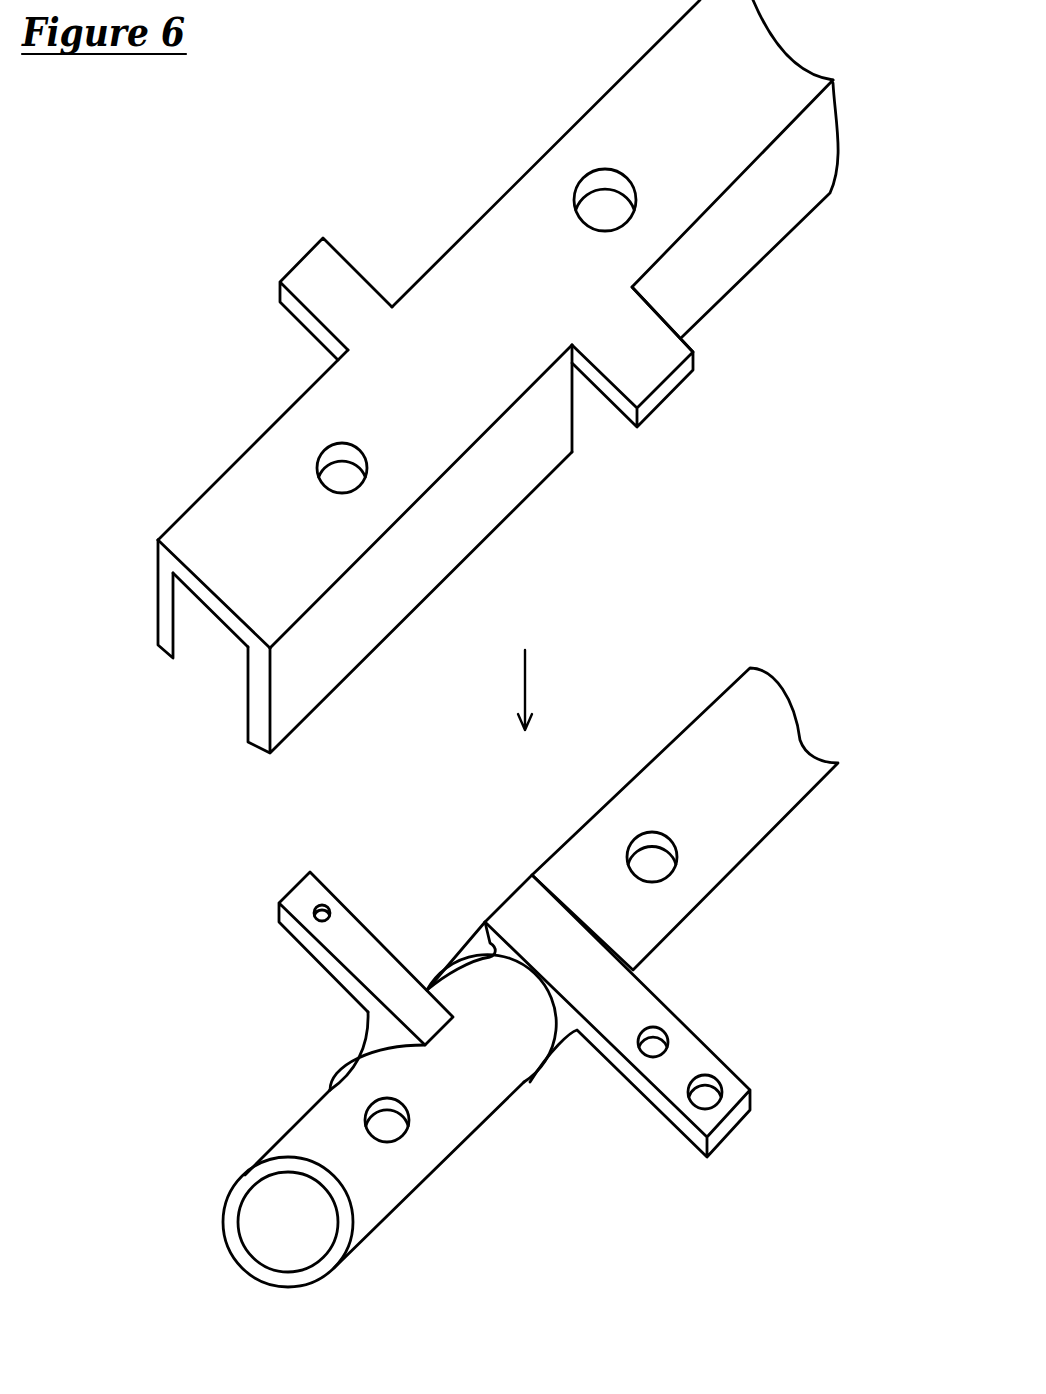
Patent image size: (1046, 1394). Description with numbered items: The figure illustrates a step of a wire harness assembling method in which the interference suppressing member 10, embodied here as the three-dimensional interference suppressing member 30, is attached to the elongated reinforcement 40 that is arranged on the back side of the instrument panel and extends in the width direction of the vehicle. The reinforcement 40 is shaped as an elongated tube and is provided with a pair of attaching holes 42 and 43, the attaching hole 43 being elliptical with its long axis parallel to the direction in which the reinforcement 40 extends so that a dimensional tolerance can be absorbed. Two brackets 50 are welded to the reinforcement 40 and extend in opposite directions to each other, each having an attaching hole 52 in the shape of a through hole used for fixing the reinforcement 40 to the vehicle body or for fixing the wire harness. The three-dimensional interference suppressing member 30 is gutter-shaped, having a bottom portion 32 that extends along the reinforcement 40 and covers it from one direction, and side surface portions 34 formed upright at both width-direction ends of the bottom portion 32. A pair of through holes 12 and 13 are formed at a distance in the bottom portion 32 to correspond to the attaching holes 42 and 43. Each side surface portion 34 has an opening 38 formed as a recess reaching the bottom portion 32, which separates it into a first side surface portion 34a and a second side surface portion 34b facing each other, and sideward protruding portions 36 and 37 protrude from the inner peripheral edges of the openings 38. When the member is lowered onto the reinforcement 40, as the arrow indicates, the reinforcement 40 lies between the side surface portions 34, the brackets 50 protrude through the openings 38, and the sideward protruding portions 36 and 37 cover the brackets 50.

The interference suppressing member 10 is at (454, 376).
The three-dimensional interference suppressing member 30 is at (488, 202).
The through hole 12 is at (348, 472).
The through hole 13 is at (612, 203).
The bottom portion 32 is at (250, 595).
The side surface portion 34 is at (454, 416).
The first side surface portion 34a is at (165, 610).
The second side surface portion 34b is at (733, 263).
The sideward protruding portion 36 is at (653, 370).
The sideward protruding portion 37 is at (310, 300).
The opening 38 is at (593, 420).
The reinforcement 40 is at (685, 730).
The attaching hole 42 is at (390, 1127).
The attaching hole 43 is at (650, 857).
The bracket 50 is at (375, 932).
The attaching hole 52 is at (322, 910).